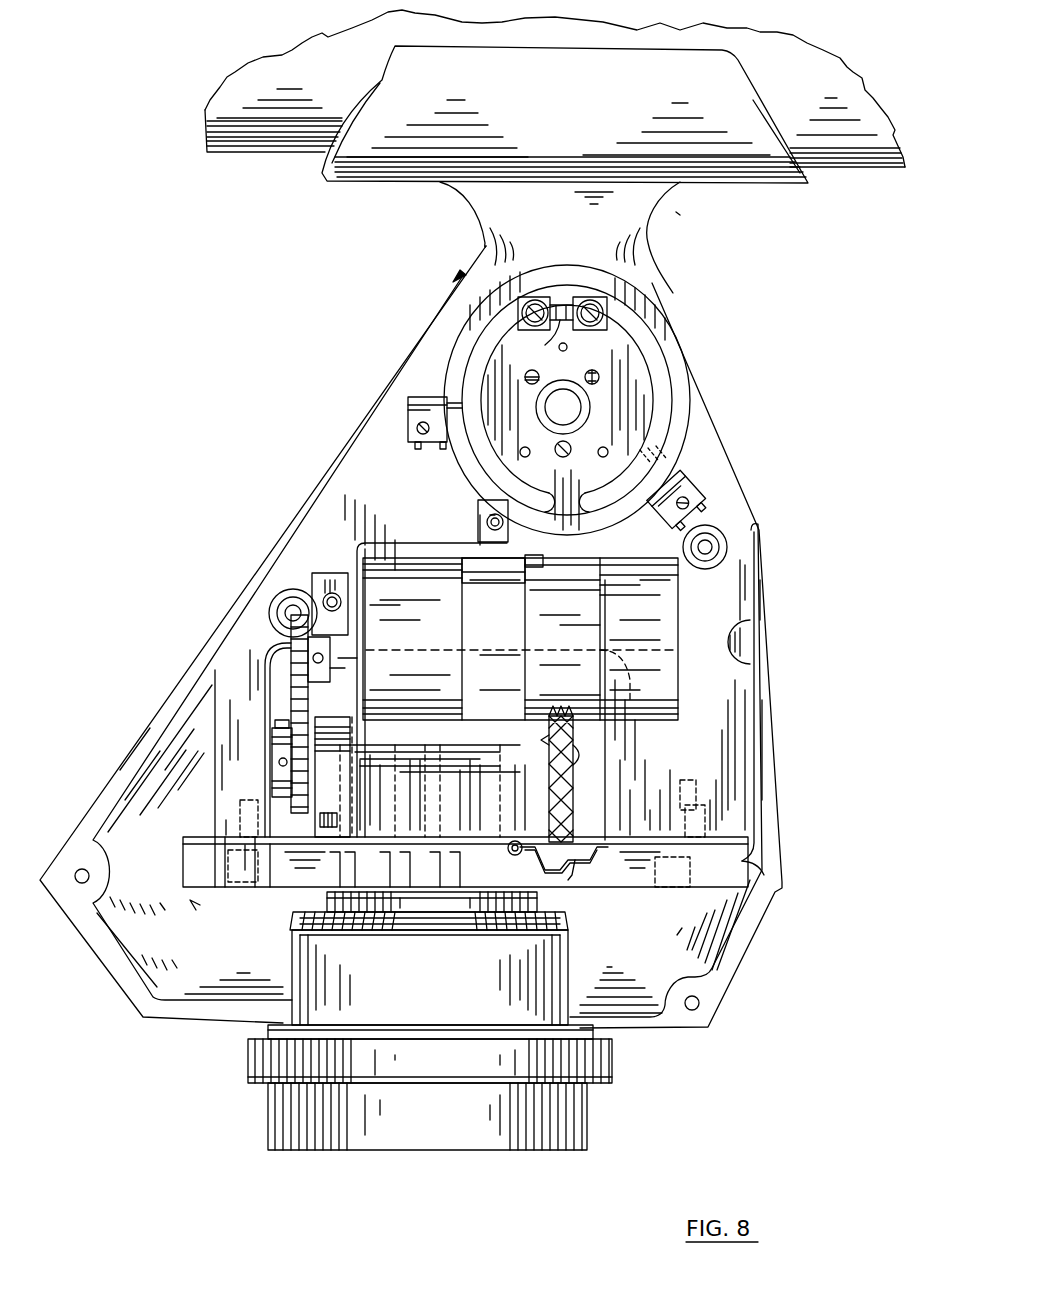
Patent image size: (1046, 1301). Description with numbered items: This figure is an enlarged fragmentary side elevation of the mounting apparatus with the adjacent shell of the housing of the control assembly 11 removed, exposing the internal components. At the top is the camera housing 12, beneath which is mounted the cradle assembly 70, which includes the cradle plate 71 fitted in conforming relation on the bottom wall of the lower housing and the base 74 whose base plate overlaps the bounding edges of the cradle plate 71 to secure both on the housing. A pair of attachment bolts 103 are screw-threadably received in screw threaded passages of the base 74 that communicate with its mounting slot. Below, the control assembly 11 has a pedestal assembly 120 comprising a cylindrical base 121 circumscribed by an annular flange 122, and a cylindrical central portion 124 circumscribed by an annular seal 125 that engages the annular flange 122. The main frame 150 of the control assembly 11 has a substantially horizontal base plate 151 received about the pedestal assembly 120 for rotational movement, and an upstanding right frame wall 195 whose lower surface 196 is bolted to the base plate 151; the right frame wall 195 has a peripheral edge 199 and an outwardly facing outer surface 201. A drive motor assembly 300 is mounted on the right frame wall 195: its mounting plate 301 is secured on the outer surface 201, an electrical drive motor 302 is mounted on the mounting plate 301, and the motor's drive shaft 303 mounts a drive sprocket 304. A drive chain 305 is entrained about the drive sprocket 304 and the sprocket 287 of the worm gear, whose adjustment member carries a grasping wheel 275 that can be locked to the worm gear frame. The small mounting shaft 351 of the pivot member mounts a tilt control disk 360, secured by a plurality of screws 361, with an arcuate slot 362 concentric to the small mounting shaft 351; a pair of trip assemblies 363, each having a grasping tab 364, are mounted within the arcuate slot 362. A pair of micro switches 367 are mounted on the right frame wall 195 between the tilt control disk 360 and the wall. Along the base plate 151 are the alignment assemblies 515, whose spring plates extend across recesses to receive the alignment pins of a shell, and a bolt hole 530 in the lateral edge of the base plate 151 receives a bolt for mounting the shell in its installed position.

The control assembly 11 is at (779, 650).
The camera housing 12 is at (258, 152).
The cradle assembly 70 is at (680, 218).
The cradle plate 71 is at (553, 110).
The base 74 is at (562, 209).
The attachment bolts 103 is at (458, 276).
The pedestal assembly 120 is at (220, 1090).
The cylindrical base 121 is at (268, 1125).
The annular flange 122 is at (614, 1070).
The cylindrical central portion 124 is at (568, 952).
The annular seal 125 is at (596, 1036).
The main frame 150 is at (191, 908).
The base plate 151 is at (280, 889).
The right frame wall 195 is at (357, 500).
The lower surface 196 is at (745, 860).
The peripheral edge 199 is at (420, 390).
The outer surface 201 is at (716, 765).
The grasping wheel 275 is at (575, 791).
The sprocket 287 is at (272, 741).
The drive motor assembly 300 is at (712, 592).
The mounting plate 301 is at (390, 545).
The electrical drive motor 302 is at (510, 615).
The drive shaft 303 is at (332, 658).
The drive sprocket 304 is at (345, 625).
The drive chain 305 is at (266, 699).
The small mounting shaft 351 is at (591, 408).
The tilt control disk 360 is at (668, 345).
The screws 361 is at (612, 365).
The arcuate slot 362 is at (488, 347).
The trip assemblies 363 is at (590, 300).
The grasping tab 364 is at (580, 360).
The micro switches 367 is at (408, 425).
The alignment assemblies 515 is at (572, 868).
The bolt hole 530 is at (485, 862).